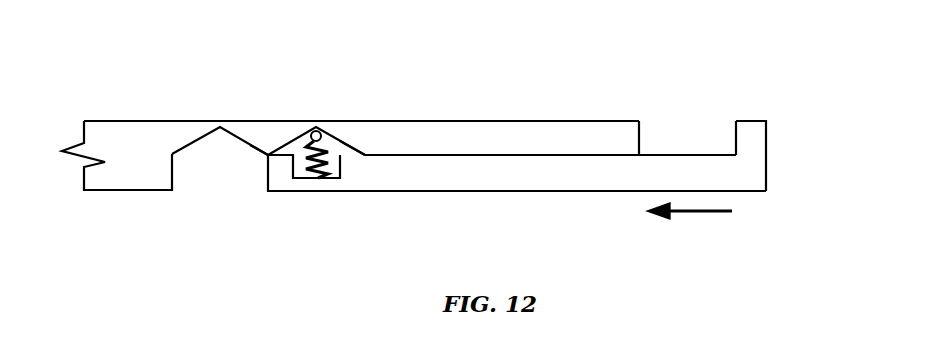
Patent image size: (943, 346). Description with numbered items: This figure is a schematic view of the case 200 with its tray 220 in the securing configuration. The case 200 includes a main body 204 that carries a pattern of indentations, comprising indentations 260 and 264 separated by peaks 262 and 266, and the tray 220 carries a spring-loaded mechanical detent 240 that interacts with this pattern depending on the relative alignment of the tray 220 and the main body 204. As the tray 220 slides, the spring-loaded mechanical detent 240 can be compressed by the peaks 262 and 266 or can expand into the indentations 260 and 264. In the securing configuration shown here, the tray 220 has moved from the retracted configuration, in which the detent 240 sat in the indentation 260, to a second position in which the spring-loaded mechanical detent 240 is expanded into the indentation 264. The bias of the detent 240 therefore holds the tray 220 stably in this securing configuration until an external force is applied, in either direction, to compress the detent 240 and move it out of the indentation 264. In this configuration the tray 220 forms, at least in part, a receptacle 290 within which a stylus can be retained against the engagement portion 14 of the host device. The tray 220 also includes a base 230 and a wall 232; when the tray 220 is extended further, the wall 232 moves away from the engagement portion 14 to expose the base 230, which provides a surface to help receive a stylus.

The case 200 is at (131, 36).
The indentation 260 is at (220, 121).
The peak 262 is at (267, 156).
The indentation 264 is at (317, 127).
The peak 266 is at (365, 152).
The main body 204 is at (510, 138).
The engagement portion 14 is at (640, 134).
The base 230 is at (722, 155).
The wall 232 is at (758, 136).
The tray 220 is at (525, 172).
The spring-loaded mechanical detent 240 is at (312, 140).
The receptacle 290 is at (689, 97).